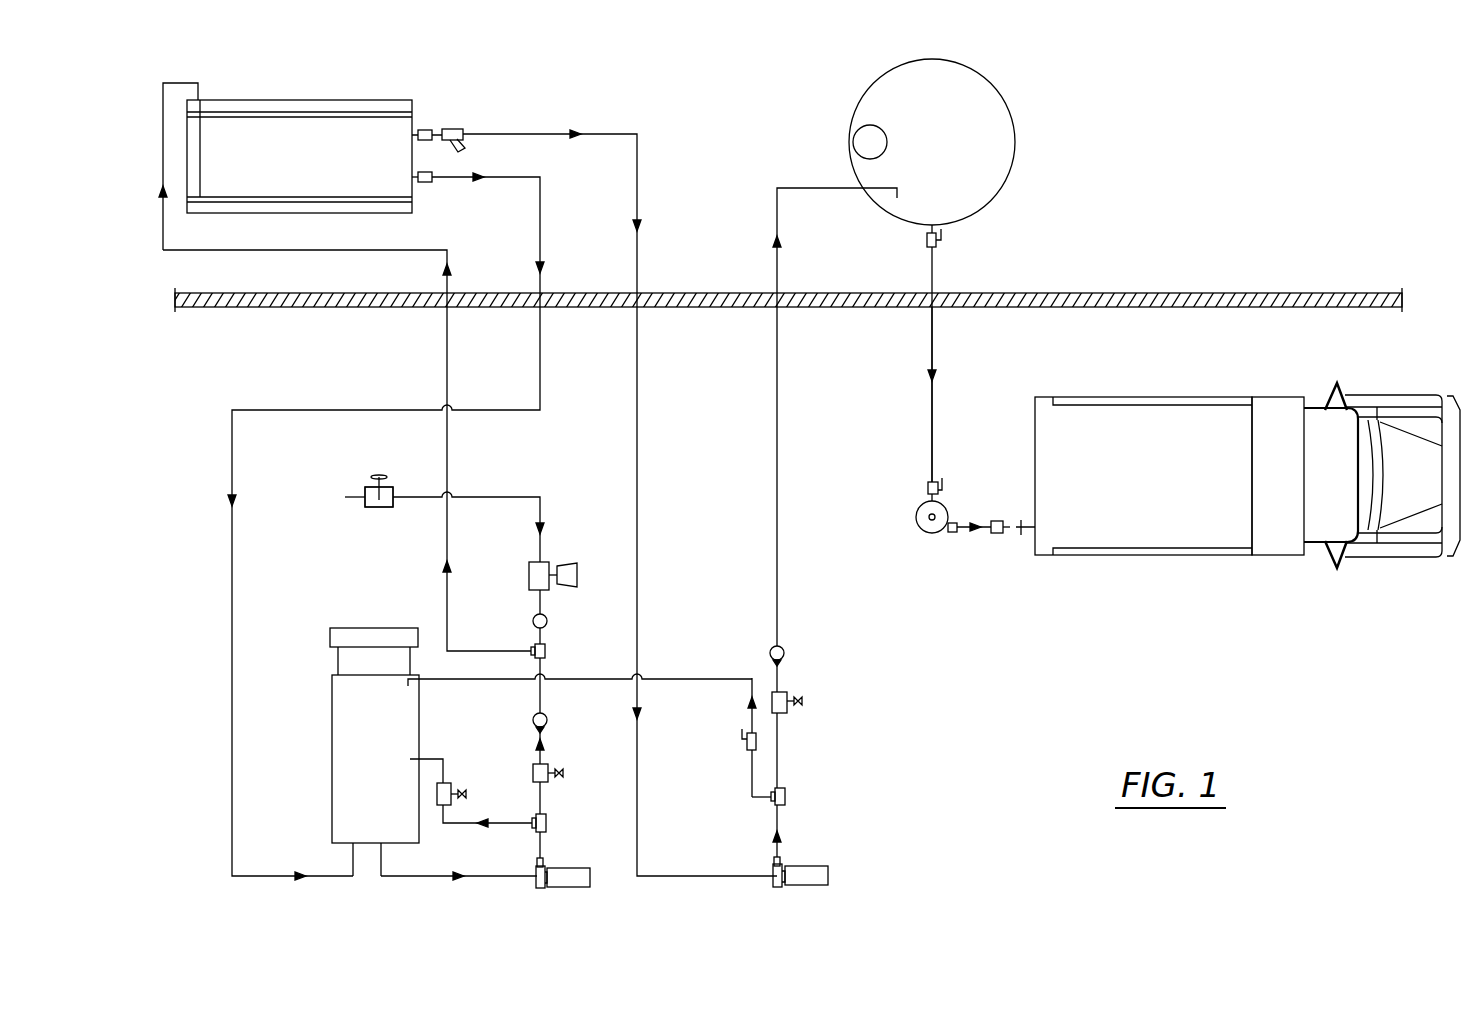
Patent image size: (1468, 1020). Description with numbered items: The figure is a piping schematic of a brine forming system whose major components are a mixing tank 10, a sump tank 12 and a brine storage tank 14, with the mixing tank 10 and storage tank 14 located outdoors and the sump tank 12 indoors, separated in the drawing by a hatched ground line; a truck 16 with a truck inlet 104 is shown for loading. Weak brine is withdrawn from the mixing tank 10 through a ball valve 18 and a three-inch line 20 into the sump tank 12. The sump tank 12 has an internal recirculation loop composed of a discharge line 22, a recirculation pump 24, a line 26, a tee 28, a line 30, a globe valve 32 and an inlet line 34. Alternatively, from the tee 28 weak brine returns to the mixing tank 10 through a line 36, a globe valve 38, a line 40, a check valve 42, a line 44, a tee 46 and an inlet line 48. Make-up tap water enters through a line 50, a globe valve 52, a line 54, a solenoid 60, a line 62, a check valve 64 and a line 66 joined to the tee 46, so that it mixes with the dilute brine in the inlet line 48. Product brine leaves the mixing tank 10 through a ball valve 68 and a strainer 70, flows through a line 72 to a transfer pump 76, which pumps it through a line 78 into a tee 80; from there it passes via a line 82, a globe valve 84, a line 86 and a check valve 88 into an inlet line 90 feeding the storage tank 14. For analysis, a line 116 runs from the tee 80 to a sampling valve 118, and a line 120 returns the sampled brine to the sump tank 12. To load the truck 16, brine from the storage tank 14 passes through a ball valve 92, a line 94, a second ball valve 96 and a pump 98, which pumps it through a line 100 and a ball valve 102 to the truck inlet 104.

The mixing tank 10 is at (300, 100).
The sump tank 12 is at (332, 725).
The brine storage tank 14 is at (1003, 92).
The truck 16 is at (1280, 556).
The ball valve 18 is at (430, 182).
The line 20 is at (541, 208).
The discharge line 22 is at (418, 878).
The recirculation pump 24 is at (590, 885).
The line 26 is at (545, 845).
The tee 28 is at (548, 823).
The line 30 is at (460, 826).
The globe valve 32 is at (451, 785).
The inlet line 34 is at (443, 756).
The line 36 is at (546, 795).
The globe valve 38 is at (550, 766).
The line 40 is at (548, 733).
The check valve 42 is at (533, 720).
The line 44 is at (546, 688).
The tee 46 is at (546, 652).
The inlet line 48 is at (452, 600).
The line 50 is at (356, 497).
The globe valve 52 is at (380, 507).
The line 54 is at (497, 497).
The solenoid 60 is at (548, 562).
The line 62 is at (545, 603).
The check valve 64 is at (533, 621).
The line 66 is at (545, 637).
The ball valve 68 is at (428, 129).
The strainer 70 is at (460, 129).
The line 72 is at (638, 160).
The transfer pump 76 is at (829, 877).
The line 78 is at (781, 820).
The tee 80 is at (788, 797).
The line 82 is at (781, 748).
The globe valve 84 is at (800, 701).
The line 86 is at (781, 680).
The check valve 88 is at (786, 650).
The inlet line 90 is at (780, 420).
The ball valve 92 is at (937, 245).
The line 94 is at (933, 398).
The second ball valve 96 is at (928, 486).
The pump 98 is at (920, 529).
The line 100 is at (980, 532).
The ball valve 102 is at (998, 520).
The truck inlet 104 is at (1021, 534).
The line 116 is at (752, 795).
The sampling valve 118 is at (746, 742).
The line 120 is at (670, 678).